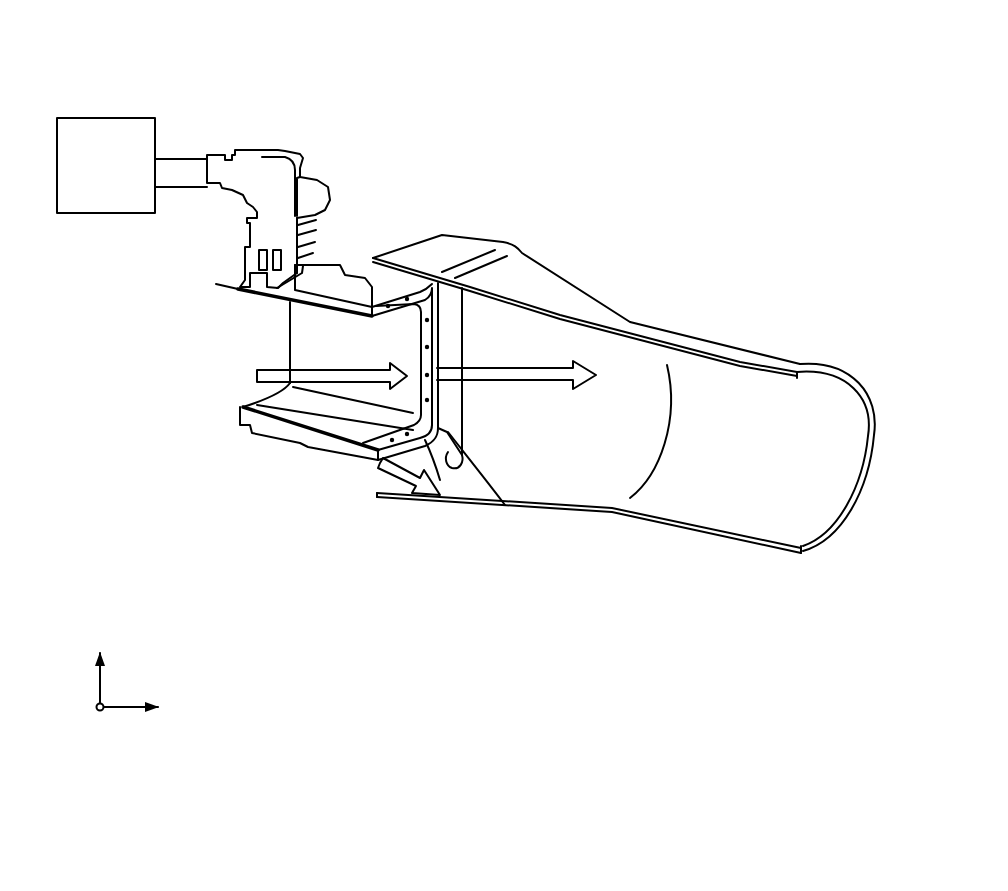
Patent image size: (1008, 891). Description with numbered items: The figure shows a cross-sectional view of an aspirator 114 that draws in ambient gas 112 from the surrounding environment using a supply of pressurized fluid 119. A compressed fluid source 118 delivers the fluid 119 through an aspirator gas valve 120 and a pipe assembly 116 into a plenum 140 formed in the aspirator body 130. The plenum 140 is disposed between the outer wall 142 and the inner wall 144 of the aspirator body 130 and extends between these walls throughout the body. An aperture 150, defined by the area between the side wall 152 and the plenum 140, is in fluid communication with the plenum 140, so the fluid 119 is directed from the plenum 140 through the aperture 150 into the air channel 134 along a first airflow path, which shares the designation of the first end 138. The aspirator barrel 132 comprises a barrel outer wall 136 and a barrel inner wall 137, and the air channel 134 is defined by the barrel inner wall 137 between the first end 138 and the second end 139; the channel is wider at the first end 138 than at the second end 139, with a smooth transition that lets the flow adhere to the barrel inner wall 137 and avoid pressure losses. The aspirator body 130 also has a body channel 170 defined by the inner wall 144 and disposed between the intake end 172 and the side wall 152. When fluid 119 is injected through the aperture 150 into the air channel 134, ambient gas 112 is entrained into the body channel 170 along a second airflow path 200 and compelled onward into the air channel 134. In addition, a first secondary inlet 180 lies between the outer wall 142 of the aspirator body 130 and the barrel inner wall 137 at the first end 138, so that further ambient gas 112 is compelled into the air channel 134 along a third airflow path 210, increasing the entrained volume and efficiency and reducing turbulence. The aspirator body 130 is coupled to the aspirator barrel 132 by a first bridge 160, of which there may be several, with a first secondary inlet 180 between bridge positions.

The ambient gas 112 is at (90, 366).
The aspirator 114 is at (397, 102).
The pipe assembly 116 is at (193, 168).
The compressed fluid source 118 is at (58, 118).
The fluid 119 is at (89, 177).
The aspirator gas valve 120 is at (272, 148).
The aspirator body 130 is at (228, 433).
The aspirator barrel 132 is at (754, 322).
The air channel 134 is at (597, 480).
The barrel outer wall 136 is at (700, 345).
The barrel inner wall 137 is at (728, 367).
The first end 138 is at (455, 235).
The second end 139 is at (833, 360).
The plenum 140 is at (288, 287).
The outer wall 142 is at (376, 447).
The inner wall 144 is at (346, 436).
The aperture 150 is at (378, 305).
The side wall 152 is at (443, 437).
The first bridge 160 is at (455, 442).
The body channel 170 is at (318, 346).
The intake end 172 is at (216, 284).
The first secondary inlet 180 is at (445, 347).
The second airflow path 200 is at (245, 375).
The third airflow path 210 is at (396, 488).